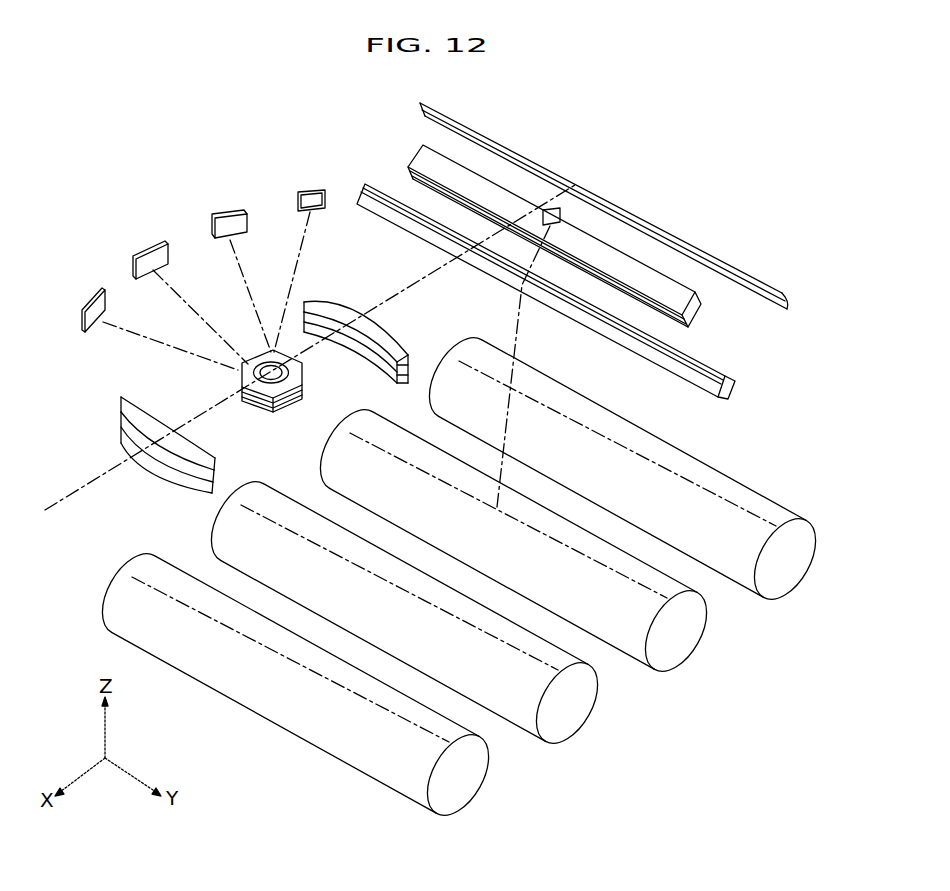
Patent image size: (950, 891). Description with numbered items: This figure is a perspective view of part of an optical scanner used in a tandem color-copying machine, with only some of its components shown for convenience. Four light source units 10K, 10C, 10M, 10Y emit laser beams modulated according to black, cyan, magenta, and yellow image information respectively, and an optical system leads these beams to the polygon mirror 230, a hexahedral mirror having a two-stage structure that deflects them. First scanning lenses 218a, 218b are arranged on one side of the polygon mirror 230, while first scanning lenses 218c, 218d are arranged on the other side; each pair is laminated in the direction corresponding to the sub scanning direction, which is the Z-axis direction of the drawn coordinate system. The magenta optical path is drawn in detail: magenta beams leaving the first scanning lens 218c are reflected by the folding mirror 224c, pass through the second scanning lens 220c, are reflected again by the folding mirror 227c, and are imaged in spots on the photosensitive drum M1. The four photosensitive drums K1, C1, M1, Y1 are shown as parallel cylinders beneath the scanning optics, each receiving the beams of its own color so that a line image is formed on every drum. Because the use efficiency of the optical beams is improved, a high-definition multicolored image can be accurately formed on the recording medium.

The light source unit 10K is at (97, 297).
The light source unit 10C is at (152, 250).
The light source unit 10M is at (227, 213).
The light source unit 10Y is at (310, 190).
The first scanning lens 218a is at (118, 413).
The first scanning lens 218b is at (118, 443).
The first scanning lens 218c is at (367, 353).
The first scanning lens 218d is at (372, 281).
The polygon mirror 230 is at (282, 408).
The second scanning lens 220c is at (412, 158).
The folding mirror 224c is at (688, 214).
The folding mirror 227c is at (715, 376).
The photosensitive drum K1 is at (485, 791).
The photosensitive drum C1 is at (592, 723).
The photosensitive drum M1 is at (704, 649).
The photosensitive drum Y1 is at (771, 497).